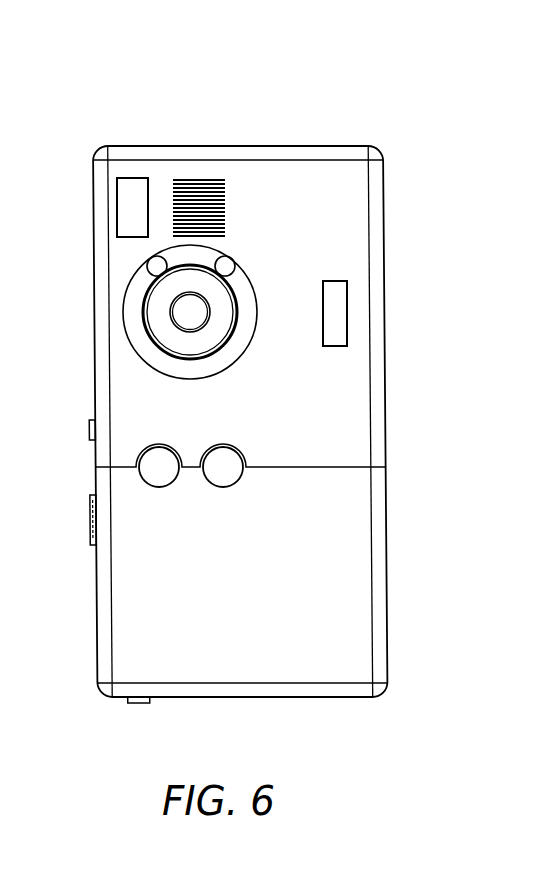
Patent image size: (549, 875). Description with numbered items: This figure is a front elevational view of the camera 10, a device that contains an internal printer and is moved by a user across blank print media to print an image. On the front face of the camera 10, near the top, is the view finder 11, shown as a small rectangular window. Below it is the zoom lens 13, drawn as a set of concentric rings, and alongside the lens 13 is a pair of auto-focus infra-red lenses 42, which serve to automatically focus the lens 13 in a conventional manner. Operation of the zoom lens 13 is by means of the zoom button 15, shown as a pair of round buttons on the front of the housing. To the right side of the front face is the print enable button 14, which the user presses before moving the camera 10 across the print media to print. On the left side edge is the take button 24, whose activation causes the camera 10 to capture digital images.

The camera 10 is at (62, 680).
The view finder 11 is at (132, 188).
The zoom lens 13 is at (183, 310).
The print enable button 14 is at (338, 317).
The zoom button 15 is at (160, 475).
The take button 24 is at (92, 532).
The auto-focus infra-red lenses 42 is at (158, 267).